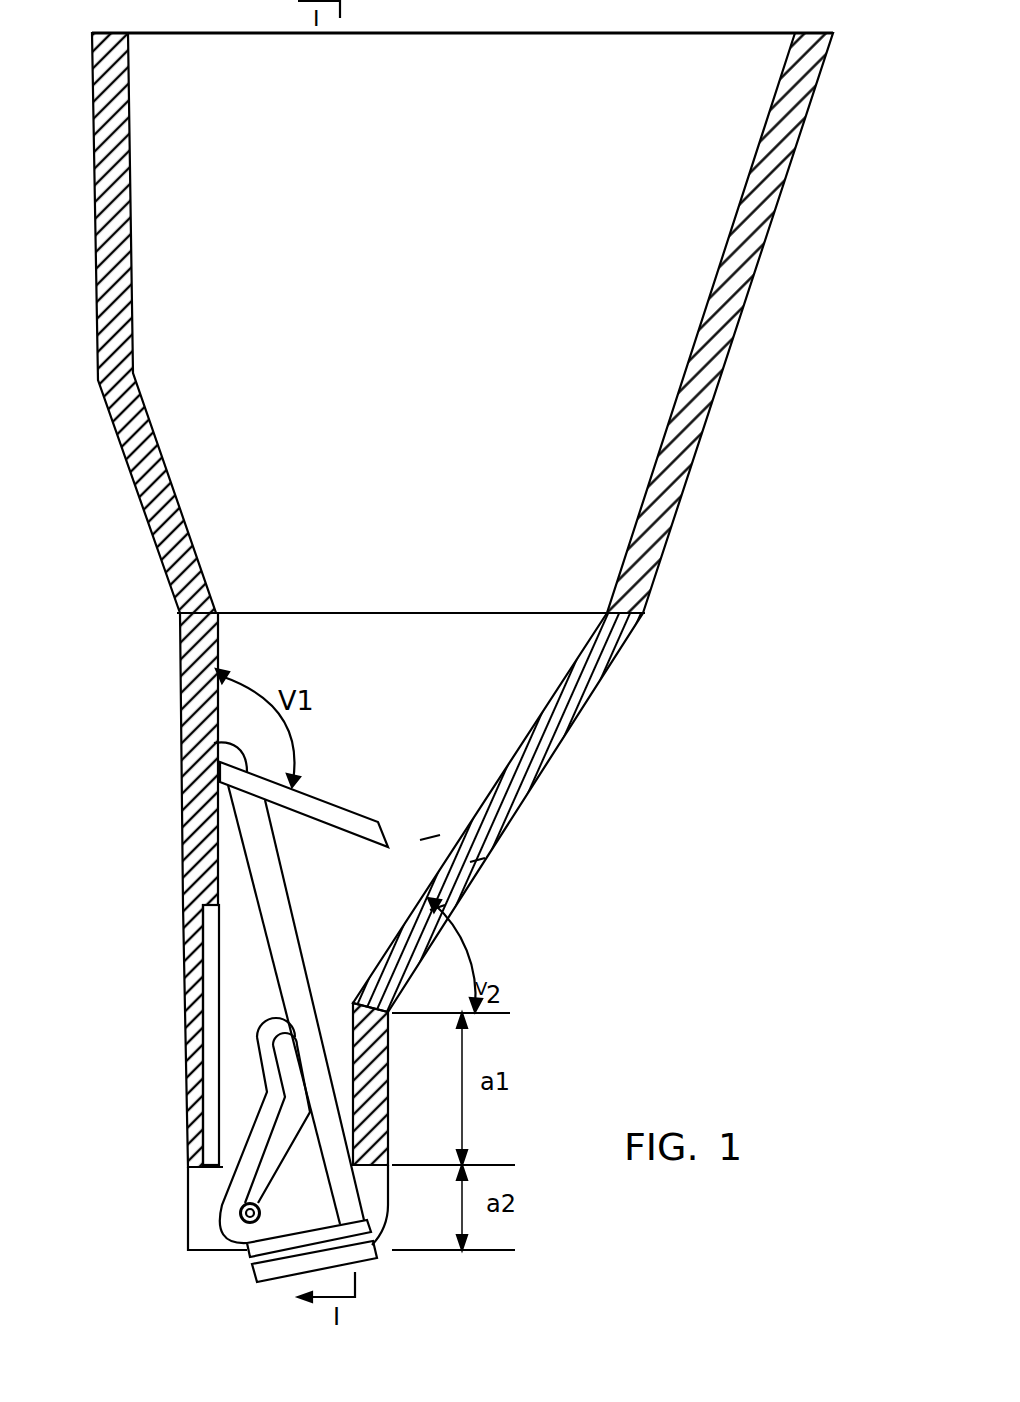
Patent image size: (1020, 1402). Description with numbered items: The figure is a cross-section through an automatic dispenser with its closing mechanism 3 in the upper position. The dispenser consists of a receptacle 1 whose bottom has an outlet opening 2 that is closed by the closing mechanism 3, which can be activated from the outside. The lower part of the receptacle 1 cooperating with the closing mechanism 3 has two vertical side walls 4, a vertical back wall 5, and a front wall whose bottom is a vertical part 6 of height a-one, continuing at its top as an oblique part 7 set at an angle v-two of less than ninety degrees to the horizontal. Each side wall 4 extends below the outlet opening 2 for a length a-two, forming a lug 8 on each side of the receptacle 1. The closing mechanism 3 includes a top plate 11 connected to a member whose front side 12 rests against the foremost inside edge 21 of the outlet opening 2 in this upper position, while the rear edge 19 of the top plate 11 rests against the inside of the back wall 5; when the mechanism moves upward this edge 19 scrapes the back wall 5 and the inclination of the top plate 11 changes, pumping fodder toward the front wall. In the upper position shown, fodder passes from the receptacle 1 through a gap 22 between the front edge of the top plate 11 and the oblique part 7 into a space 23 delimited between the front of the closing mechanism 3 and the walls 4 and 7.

The receptacle 1 is at (690, 427).
The outlet opening 2 is at (273, 1165).
The closing mechanism 3 is at (283, 927).
The side walls 4 is at (527, 676).
The back wall 5 is at (220, 690).
The vertical part of front wall 6 is at (373, 1038).
The oblique part of front wall 7 is at (480, 861).
The lug 8 is at (203, 1227).
The top plate 11 is at (216, 746).
The front side of member 12 is at (308, 967).
The rear edge of top plate 19 is at (222, 773).
The foremost inside edge of outlet opening 21 is at (360, 1167).
The gap 22 is at (427, 837).
The space 23 is at (443, 908).